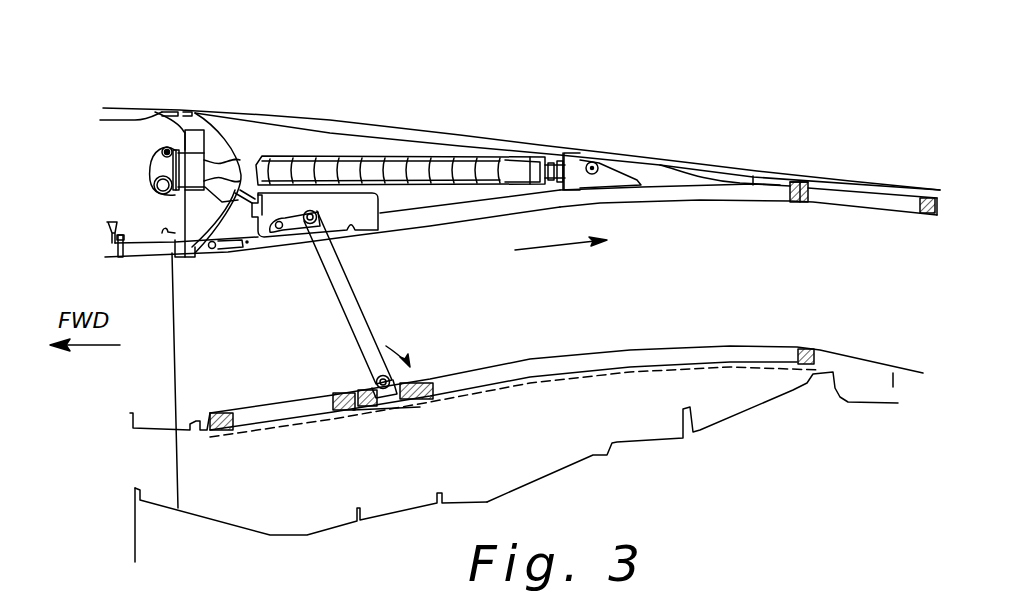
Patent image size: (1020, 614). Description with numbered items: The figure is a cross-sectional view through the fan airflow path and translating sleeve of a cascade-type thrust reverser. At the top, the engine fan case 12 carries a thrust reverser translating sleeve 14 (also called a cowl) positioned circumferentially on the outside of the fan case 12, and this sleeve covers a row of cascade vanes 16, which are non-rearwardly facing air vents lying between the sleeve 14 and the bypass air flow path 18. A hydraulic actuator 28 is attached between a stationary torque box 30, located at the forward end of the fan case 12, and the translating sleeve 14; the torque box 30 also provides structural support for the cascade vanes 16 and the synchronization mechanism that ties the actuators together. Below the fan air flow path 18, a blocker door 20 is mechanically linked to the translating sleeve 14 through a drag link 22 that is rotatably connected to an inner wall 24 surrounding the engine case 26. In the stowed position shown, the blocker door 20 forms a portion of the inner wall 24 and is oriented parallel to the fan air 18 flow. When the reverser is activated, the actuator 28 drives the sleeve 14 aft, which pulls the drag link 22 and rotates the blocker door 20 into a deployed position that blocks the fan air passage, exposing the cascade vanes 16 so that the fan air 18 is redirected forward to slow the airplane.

The engine fan case 12 is at (272, 76).
The thrust reverser translating sleeve 14 is at (448, 133).
The cascade vanes 16 is at (462, 160).
The bypass air flow path 18 is at (540, 248).
The blocker door 20 is at (256, 257).
The drag link 22 is at (347, 297).
The inner wall 24 is at (528, 357).
The engine case 26 is at (290, 532).
The hydraulic actuator 28 is at (240, 167).
The torque box 30 is at (185, 132).